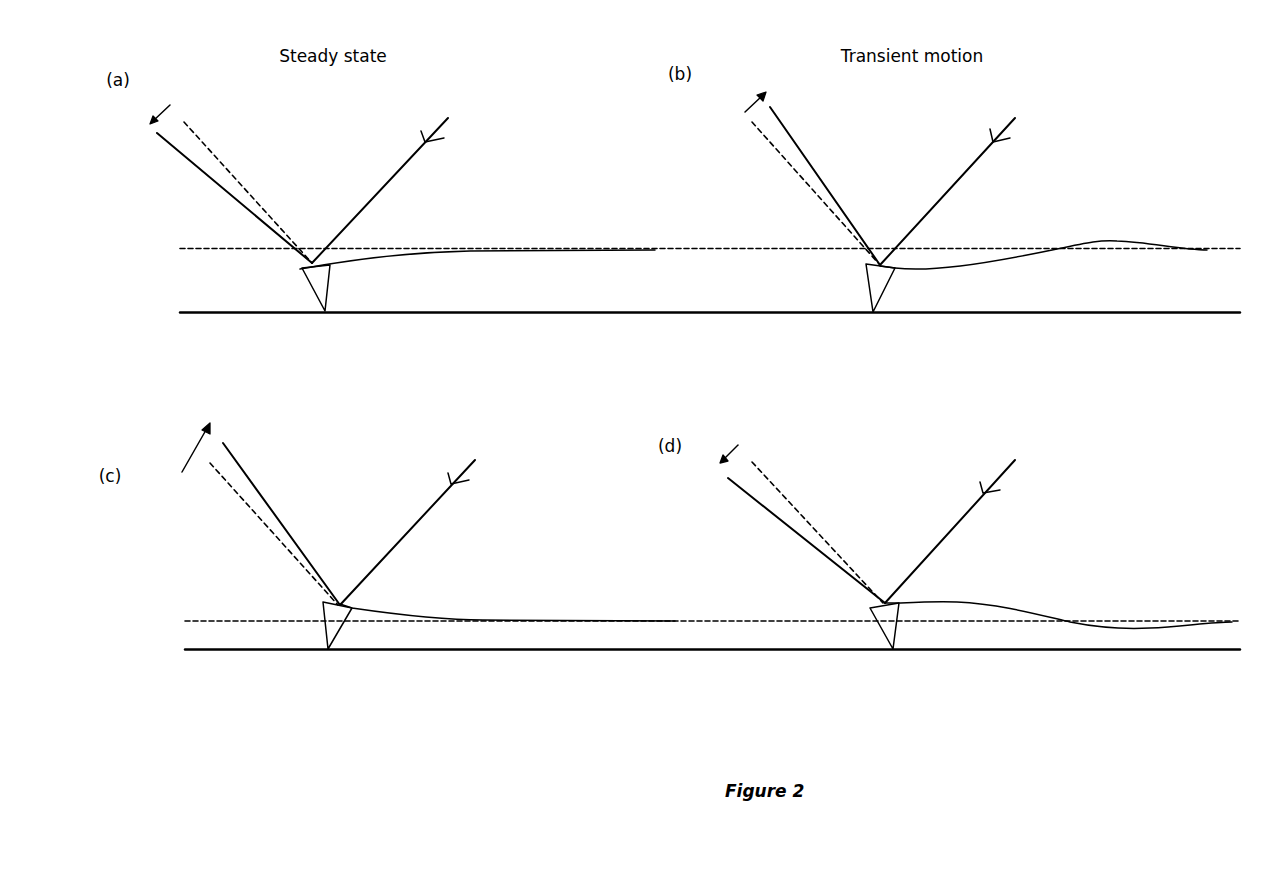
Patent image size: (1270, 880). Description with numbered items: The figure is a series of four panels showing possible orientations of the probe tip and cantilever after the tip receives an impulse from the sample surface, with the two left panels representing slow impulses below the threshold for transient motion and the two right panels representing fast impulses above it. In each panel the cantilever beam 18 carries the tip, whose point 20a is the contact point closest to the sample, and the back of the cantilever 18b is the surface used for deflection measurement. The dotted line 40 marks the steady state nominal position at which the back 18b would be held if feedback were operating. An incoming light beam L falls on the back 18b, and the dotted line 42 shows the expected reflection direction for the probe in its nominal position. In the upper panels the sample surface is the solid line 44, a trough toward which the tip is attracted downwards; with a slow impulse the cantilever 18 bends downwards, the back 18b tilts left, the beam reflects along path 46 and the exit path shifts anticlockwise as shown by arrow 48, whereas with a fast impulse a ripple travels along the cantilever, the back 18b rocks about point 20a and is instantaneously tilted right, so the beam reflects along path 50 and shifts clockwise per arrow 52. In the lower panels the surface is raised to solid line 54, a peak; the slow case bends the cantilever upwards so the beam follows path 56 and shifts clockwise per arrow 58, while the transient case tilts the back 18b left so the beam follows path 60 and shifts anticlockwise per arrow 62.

The cantilever beam 18 is at (500, 251).
The back of the cantilever 18b is at (300, 268).
The point of the probe 20a is at (325, 311).
The dotted line 40 is at (208, 248).
The expected reflection direction 42 is at (224, 165).
The solid line 44 is at (1175, 311).
The path 46 is at (183, 155).
The arrow 48 is at (162, 103).
The path 50 is at (802, 149).
The arrow 52 is at (752, 98).
The solid line 54 is at (1188, 649).
The path 56 is at (287, 529).
The arrow 58 is at (188, 460).
The path 60 is at (783, 523).
The arrow 62 is at (727, 452).
The light beam L is at (671, 361).